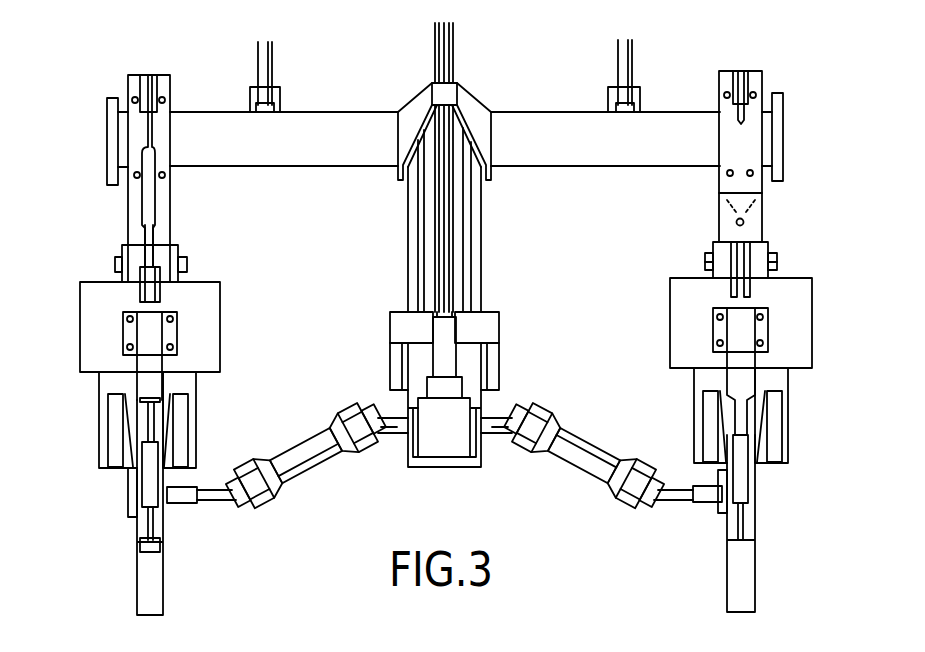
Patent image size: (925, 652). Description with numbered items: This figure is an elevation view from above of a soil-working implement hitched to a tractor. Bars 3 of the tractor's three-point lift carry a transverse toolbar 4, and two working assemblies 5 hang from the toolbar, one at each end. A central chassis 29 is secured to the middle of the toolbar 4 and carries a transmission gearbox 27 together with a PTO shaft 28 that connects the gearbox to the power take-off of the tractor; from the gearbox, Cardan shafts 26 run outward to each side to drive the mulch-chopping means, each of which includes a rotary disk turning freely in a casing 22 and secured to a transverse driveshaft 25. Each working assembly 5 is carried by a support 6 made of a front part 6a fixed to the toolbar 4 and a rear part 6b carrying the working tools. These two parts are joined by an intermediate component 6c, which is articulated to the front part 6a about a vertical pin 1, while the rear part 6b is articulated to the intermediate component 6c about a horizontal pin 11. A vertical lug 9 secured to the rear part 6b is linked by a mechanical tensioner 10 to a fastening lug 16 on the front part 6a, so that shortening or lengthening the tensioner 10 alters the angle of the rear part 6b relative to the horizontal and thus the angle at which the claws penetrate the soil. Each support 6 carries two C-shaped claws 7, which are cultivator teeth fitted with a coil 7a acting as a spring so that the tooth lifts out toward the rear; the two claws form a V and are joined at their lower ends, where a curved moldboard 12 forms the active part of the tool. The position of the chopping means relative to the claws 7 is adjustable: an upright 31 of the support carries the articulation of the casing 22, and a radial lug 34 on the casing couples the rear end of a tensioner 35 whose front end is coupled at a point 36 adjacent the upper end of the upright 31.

The vertical pin 1 is at (737, 221).
The bar of the three-point lift 3 is at (272, 68).
The transverse toolbar 4 is at (605, 167).
The working assembly 5 is at (118, 522).
The support 6 is at (97, 275).
The front part 6a is at (752, 147).
The rear part 6b is at (205, 352).
The intermediate component 6c is at (720, 250).
The claw 7 is at (128, 478).
The coil 7a is at (174, 422).
The vertical lug 9 is at (158, 297).
The mechanical tensioner 10 is at (150, 188).
The horizontal pin 11 is at (705, 262).
The curved moldboard 12 is at (746, 569).
The fastening lug 16 is at (153, 78).
The casing 22 is at (153, 595).
The transverse driveshaft 25 is at (218, 504).
The Cardan shaft 26 is at (300, 478).
The transmission gearbox 27 is at (448, 450).
The PTO shaft 28 is at (452, 256).
The central chassis 29 is at (476, 206).
The upright 31 is at (145, 336).
The radial lug 34 is at (148, 549).
The tensioner 35 is at (147, 484).
The coupling point 36 is at (140, 398).